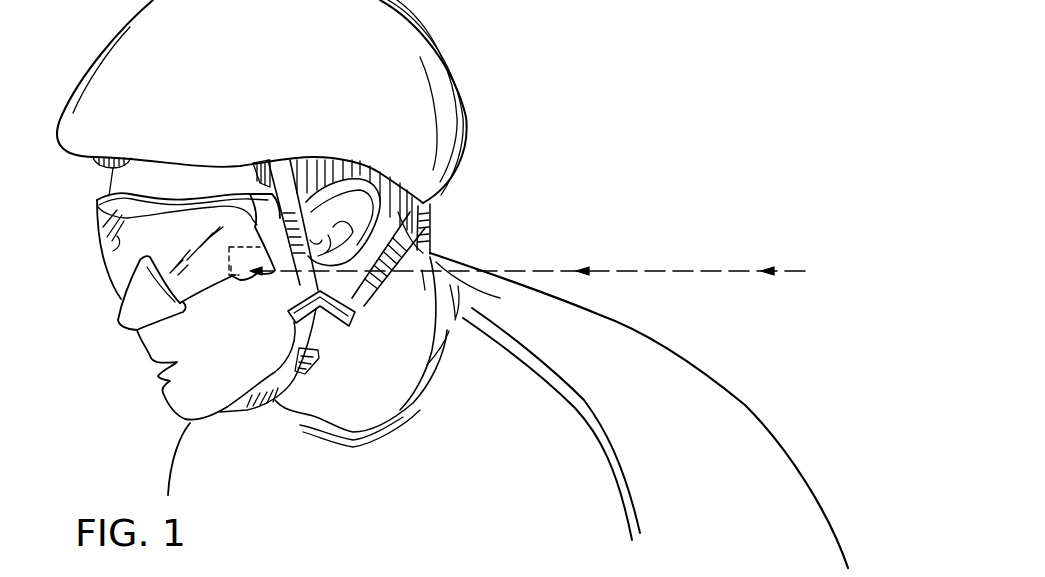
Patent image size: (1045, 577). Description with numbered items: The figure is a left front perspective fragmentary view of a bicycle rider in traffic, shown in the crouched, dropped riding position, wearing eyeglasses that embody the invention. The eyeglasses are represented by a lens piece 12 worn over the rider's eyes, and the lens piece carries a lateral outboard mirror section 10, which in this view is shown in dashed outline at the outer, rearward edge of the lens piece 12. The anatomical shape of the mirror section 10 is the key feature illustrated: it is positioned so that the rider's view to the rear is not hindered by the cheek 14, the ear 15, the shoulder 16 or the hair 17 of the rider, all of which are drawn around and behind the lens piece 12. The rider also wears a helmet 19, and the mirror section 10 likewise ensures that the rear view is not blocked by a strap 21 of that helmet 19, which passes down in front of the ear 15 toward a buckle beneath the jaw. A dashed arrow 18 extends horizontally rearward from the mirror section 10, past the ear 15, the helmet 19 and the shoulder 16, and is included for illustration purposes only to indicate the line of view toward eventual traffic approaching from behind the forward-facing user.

The lateral outboard mirror section 10 is at (231, 276).
The lens piece 12 is at (115, 241).
The cheek 14 is at (251, 291).
The ear 15 is at (355, 254).
The shoulder 16 is at (583, 334).
The hair 17 is at (430, 251).
The dashed arrow 18 is at (548, 274).
The helmet 19 is at (440, 156).
The strap 21 is at (307, 278).